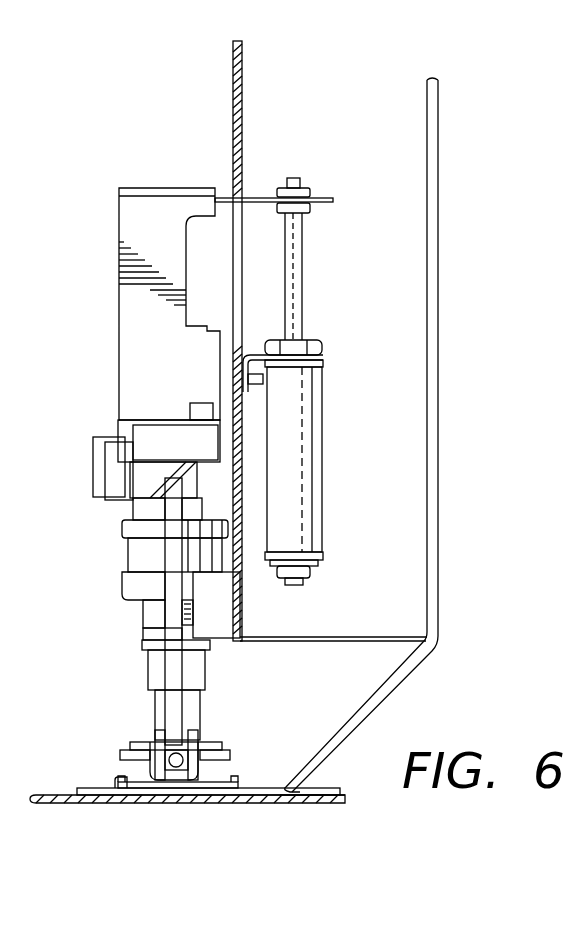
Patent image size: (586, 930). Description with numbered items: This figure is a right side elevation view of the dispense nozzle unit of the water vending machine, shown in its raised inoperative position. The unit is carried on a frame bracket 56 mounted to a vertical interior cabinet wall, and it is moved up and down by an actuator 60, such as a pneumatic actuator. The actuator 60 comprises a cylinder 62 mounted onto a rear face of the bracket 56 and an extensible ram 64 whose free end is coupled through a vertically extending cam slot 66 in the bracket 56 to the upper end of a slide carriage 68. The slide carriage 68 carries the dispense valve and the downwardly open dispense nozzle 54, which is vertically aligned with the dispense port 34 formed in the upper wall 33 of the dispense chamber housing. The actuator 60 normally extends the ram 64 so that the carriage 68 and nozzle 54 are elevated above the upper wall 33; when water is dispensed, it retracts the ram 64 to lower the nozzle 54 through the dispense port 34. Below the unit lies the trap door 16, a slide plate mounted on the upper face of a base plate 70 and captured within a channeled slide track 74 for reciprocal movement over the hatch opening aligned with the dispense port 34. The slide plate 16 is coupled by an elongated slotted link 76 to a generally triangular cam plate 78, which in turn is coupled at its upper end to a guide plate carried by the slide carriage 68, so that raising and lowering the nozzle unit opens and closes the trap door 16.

The trap door 16 is at (180, 797).
The upper wall 33 is at (290, 801).
The dispense port 34 is at (140, 801).
The dispense nozzle 54 is at (148, 670).
The frame bracket 56 is at (233, 66).
The actuator 60 is at (368, 536).
The cylinder 62 is at (325, 457).
The extensible ram 64 is at (303, 276).
The cam slot 66 is at (240, 193).
The slide carriage 68 is at (119, 217).
The base plate 70 is at (283, 790).
The channeled slide track 74 is at (118, 785).
The slotted link 76 is at (160, 748).
The cam plate 78 is at (178, 587).